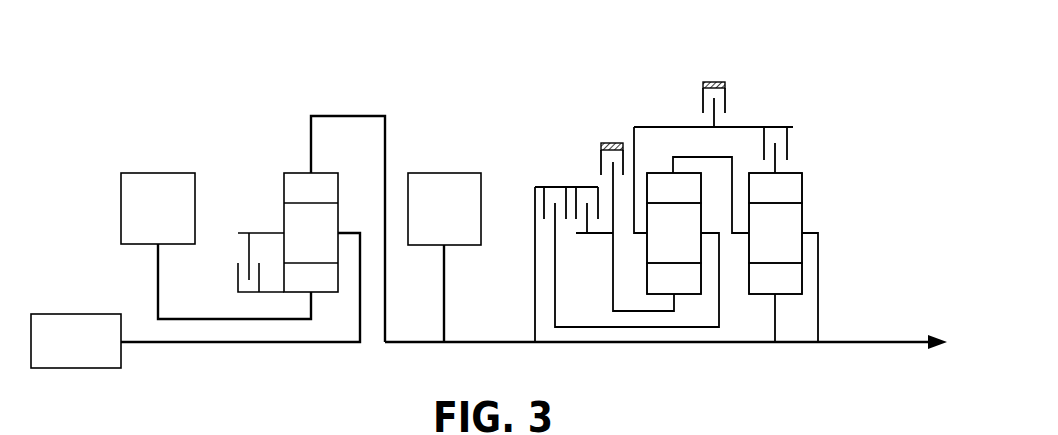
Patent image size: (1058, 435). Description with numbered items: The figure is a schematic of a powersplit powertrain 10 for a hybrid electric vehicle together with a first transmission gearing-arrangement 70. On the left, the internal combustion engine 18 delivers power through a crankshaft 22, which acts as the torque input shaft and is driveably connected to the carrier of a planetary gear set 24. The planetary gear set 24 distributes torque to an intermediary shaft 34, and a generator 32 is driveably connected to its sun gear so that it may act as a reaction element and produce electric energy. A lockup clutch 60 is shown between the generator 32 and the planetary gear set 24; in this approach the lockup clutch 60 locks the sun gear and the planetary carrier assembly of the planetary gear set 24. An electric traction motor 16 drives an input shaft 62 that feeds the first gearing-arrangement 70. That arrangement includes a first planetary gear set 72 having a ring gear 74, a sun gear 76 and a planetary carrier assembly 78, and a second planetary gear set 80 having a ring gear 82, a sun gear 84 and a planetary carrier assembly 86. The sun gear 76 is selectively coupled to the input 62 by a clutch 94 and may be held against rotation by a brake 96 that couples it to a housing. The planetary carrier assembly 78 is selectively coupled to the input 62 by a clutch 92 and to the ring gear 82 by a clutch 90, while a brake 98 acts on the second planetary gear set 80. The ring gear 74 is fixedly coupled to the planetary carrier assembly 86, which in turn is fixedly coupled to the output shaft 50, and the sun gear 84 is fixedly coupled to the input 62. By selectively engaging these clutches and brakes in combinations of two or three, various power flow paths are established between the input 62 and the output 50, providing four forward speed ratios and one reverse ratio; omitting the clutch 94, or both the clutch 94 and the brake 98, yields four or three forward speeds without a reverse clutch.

The powersplit powertrain 10 is at (222, 90).
The electric traction motor 16 is at (427, 173).
The internal combustion engine 18 is at (95, 314).
The crankshaft 22 is at (255, 343).
The planetary gear set 24 is at (322, 172).
The generator 32 is at (175, 172).
The intermediary shaft 34 is at (413, 343).
The output shaft 50 is at (852, 343).
The lockup clutch 60 is at (270, 233).
The input shaft 62 is at (497, 343).
The first gearing-arrangement 70 is at (731, 34).
The first planetary gear set 72 is at (698, 213).
The ring gear 74 is at (685, 198).
The sun gear 76 is at (685, 288).
The planetary carrier assembly 78 is at (685, 243).
The second planetary gear set 80 is at (802, 238).
The ring gear 82 is at (786, 198).
The sun gear 84 is at (786, 288).
The planetary carrier assembly 86 is at (786, 243).
The clutch 90 is at (773, 127).
The clutch 92 is at (557, 187).
The clutch 94 is at (585, 187).
The brake 96 is at (611, 143).
The brake 98 is at (715, 82).